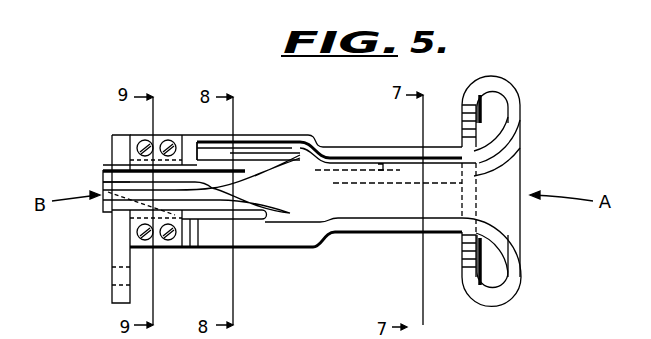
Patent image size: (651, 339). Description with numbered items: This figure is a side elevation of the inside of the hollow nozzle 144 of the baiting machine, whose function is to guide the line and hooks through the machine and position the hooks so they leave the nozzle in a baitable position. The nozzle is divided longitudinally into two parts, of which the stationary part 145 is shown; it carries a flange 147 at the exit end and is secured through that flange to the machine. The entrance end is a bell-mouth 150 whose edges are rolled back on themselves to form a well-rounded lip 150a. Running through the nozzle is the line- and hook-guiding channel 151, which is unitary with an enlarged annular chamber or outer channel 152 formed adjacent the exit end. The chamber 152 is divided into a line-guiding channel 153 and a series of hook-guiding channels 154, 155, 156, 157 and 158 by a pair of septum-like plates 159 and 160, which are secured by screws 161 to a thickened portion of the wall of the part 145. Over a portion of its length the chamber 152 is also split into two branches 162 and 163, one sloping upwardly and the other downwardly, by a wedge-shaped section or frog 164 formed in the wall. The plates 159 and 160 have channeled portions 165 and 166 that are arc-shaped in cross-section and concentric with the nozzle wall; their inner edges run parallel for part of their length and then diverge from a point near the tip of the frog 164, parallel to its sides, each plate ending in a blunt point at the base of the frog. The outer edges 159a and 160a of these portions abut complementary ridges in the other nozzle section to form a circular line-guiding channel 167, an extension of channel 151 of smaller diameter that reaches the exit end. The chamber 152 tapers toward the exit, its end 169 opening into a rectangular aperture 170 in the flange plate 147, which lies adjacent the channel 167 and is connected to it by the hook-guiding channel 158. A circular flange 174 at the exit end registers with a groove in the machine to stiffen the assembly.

The hollow nozzle 144 is at (435, 233).
The stationary nozzle part 145 is at (303, 234).
The flange 147 is at (113, 255).
The bell-mouth 150 is at (523, 158).
The lip 150a is at (497, 302).
The line- and hook-guiding channel 151 is at (380, 163).
The annular chamber or outer channel 152 is at (272, 148).
The line-guiding channel 153 is at (178, 200).
The hook-guiding channel 154 is at (233, 167).
The hook-guiding channel 155 is at (238, 172).
The hook-guiding channel 156 is at (238, 209).
The hook-guiding channel 157 is at (256, 228).
The hook-guiding channel 158 is at (173, 186).
The septum-like plate 159 is at (192, 213).
The outer edge of plate 159a is at (203, 205).
The septum-like plate 160 is at (207, 160).
The outer edge of plate 160a is at (223, 157).
The screws 161 is at (162, 141).
The branch of chamber 162 is at (307, 202).
The branch of chamber 163 is at (295, 150).
The wedge-shaped section or frog 164 is at (257, 187).
The channeled portion of plate 165 is at (237, 205).
The channeled portion of plate 166 is at (188, 170).
The circular line-guiding channel 167 is at (110, 168).
The end of tapered portion 169 is at (137, 193).
The rectangular aperture 170 is at (118, 197).
The circular flange 174 is at (377, 234).